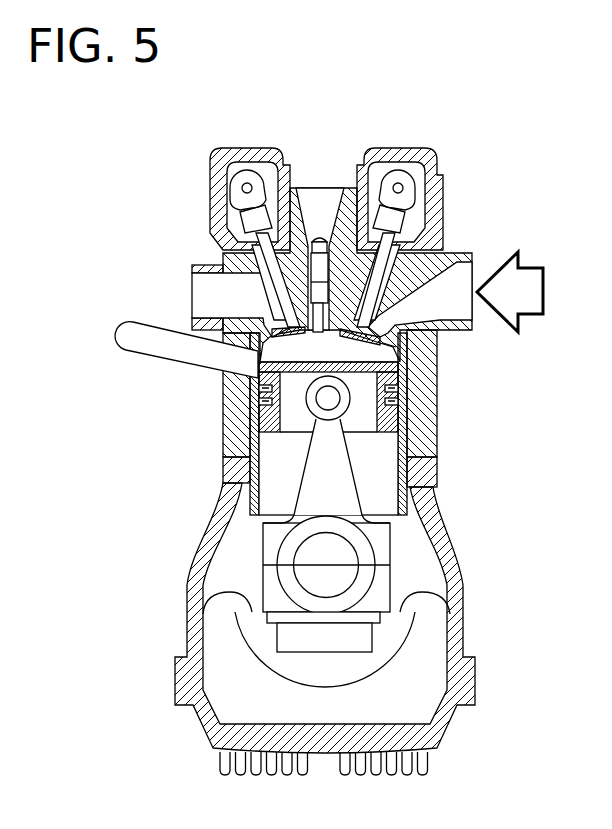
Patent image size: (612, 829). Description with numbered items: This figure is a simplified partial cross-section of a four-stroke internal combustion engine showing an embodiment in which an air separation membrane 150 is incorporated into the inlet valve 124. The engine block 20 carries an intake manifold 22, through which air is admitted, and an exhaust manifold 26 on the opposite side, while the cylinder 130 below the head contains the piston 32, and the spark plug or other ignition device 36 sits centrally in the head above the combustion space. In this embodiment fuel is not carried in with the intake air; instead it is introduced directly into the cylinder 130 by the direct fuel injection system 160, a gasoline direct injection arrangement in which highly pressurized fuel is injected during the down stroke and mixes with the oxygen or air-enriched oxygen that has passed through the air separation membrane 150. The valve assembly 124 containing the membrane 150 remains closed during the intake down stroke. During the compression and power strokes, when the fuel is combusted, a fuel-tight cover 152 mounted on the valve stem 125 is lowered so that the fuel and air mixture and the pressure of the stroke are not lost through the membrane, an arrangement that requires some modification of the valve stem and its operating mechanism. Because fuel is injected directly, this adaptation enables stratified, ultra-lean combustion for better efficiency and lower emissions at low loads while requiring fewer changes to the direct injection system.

The engine block 20 is at (465, 640).
The intake manifold 22 is at (462, 282).
The exhaust manifold 26 is at (232, 288).
The piston 32 is at (278, 413).
The spark plug or other ignition device 36 is at (321, 242).
The inlet valve 124 is at (378, 340).
The valve stem 125 is at (433, 240).
The cylinder 130 is at (228, 334).
The air separation membrane 150 is at (388, 334).
The fuel-tight cover 152 is at (444, 264).
The direct fuel injection system 160 is at (183, 357).